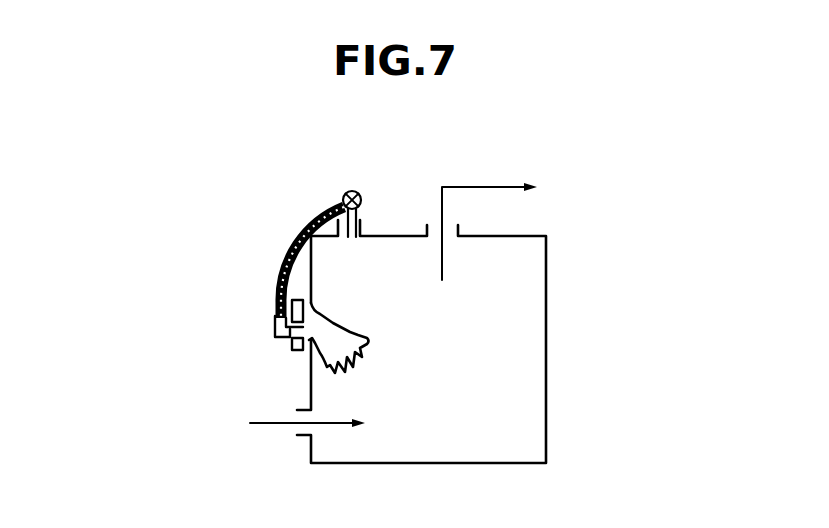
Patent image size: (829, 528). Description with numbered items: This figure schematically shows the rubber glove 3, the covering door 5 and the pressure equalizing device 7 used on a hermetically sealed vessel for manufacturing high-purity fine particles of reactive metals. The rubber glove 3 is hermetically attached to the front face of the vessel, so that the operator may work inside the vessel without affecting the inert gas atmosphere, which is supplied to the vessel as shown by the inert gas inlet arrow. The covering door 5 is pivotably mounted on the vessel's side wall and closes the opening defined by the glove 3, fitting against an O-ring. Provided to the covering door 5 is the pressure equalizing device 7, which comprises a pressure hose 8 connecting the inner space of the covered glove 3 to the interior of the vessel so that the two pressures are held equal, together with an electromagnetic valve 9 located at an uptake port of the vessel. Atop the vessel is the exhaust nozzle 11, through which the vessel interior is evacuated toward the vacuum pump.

The rubber glove 3 is at (372, 353).
The covering door 5 is at (293, 346).
The pressure equalizing device 7 is at (280, 228).
The pressure hose 8 is at (273, 272).
The electromagnetic valve 9 is at (352, 191).
The exhaust nozzle 11 is at (482, 211).